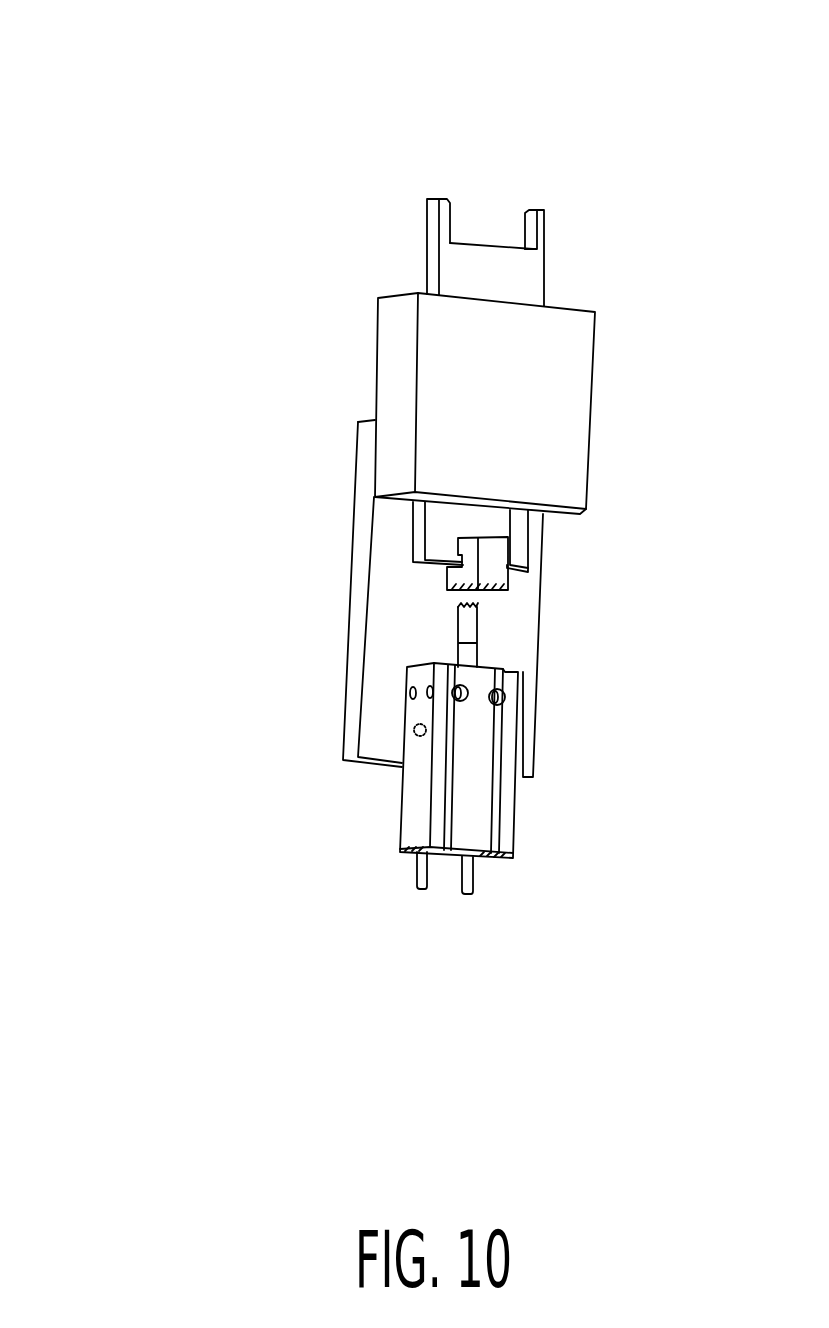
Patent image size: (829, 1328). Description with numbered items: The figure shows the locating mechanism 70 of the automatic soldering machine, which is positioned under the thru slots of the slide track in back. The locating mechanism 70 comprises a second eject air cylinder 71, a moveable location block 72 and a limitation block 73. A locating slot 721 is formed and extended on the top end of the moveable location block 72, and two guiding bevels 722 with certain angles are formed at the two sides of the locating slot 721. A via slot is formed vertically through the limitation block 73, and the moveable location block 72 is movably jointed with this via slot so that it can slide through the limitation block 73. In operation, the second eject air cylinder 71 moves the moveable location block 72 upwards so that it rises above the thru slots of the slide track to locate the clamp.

The locating mechanism 70 is at (115, 77).
The second eject air cylinder 71 is at (475, 808).
The moveable location block 72 is at (497, 517).
The locating slot 721 is at (467, 242).
The guiding bevels 722 is at (527, 238).
The limitation block 73 is at (400, 385).